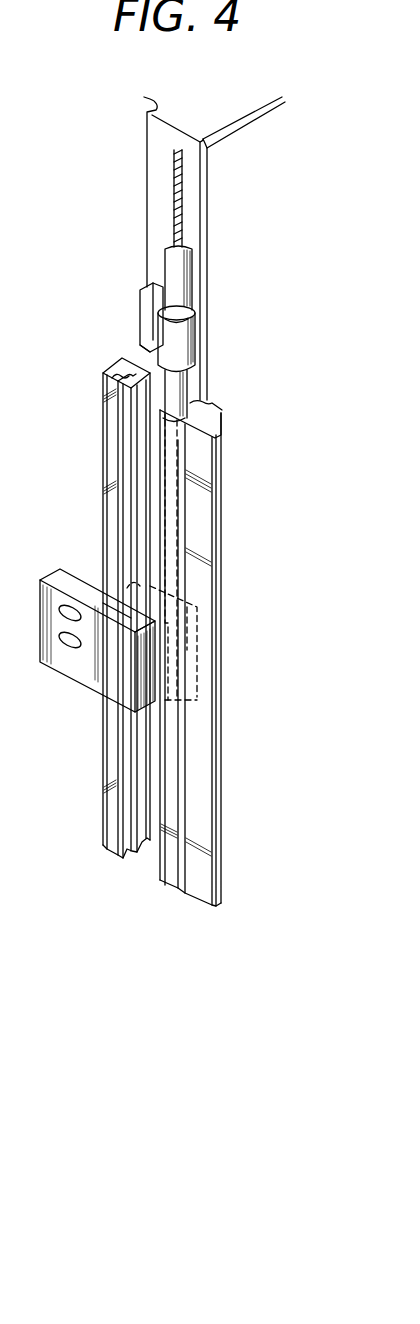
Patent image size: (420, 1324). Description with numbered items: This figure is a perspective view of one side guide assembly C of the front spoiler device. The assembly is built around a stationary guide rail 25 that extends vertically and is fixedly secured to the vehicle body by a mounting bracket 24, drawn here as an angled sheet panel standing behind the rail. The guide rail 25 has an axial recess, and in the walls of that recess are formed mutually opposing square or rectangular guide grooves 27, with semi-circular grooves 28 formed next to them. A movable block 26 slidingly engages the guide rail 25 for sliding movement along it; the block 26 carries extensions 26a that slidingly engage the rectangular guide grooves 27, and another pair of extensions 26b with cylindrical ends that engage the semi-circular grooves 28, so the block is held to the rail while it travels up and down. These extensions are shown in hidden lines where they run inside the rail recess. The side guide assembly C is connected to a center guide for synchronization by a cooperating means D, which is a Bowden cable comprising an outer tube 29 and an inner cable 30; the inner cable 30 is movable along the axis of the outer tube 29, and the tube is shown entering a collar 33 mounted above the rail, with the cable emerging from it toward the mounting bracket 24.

The mounting bracket 24 is at (146, 166).
The inner cable 30 is at (184, 205).
The outer tube 29 is at (193, 295).
The collar 33 is at (188, 350).
The guide grooves 27 is at (133, 367).
The semi-circular grooves 28 is at (118, 373).
The stationary guide rail 25 is at (108, 431).
The movable block 26 is at (102, 678).
The extensions 26a is at (130, 583).
The extensions with cylindrical ends 26b is at (122, 585).
The side guide assembly C is at (101, 344).
The cooperating means D is at (192, 268).